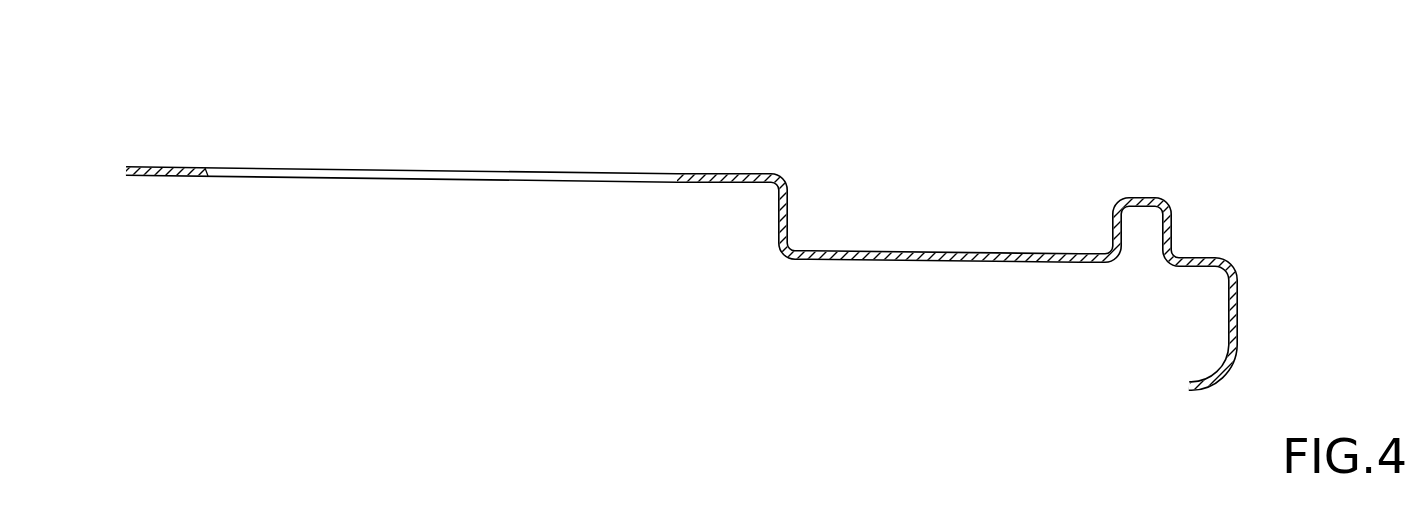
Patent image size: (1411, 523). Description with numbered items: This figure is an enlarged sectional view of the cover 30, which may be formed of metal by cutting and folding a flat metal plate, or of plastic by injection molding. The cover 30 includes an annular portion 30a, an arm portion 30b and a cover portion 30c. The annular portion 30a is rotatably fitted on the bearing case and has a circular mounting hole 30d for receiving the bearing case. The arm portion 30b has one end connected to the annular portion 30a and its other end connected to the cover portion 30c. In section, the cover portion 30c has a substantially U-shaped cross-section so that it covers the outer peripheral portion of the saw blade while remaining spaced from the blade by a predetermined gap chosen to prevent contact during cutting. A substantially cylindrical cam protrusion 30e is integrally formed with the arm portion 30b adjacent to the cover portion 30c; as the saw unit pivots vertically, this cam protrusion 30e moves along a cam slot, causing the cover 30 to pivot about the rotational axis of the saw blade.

The cover 30 is at (800, 155).
The annular portion 30a is at (288, 168).
The arm portion 30b is at (923, 260).
The cover portion 30c is at (1240, 338).
The circular mounting hole 30d is at (670, 177).
The cam protrusion 30e is at (1141, 197).